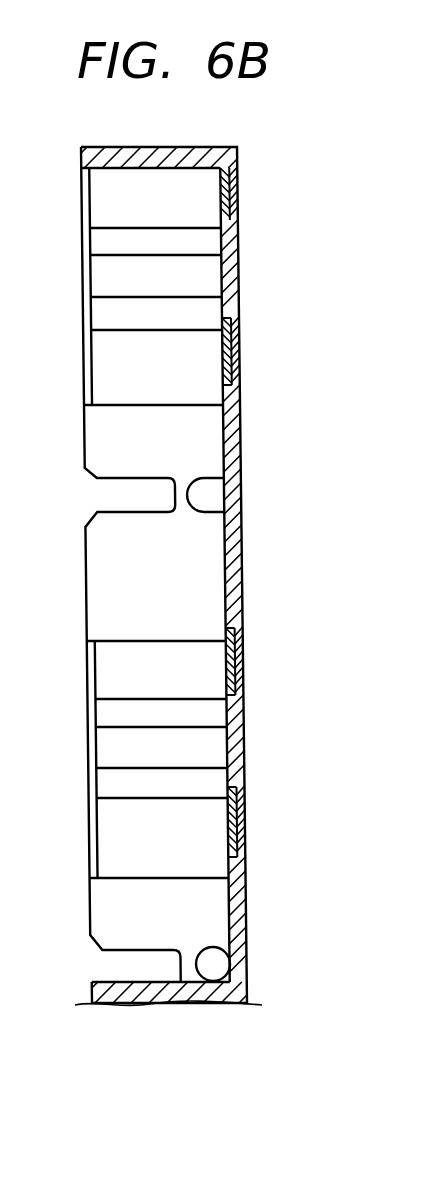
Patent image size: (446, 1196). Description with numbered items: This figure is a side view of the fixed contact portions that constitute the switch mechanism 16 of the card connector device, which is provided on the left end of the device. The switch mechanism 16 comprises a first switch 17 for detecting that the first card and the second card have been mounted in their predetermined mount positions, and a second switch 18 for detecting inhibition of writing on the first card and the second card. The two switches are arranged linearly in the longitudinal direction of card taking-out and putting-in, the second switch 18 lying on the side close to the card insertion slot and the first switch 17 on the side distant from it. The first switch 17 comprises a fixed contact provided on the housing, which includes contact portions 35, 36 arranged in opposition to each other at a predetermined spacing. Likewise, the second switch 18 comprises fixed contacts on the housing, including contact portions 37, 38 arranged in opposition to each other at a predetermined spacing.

The switch mechanism 16 is at (306, 566).
The first switch 17 is at (313, 175).
The second switch 18 is at (320, 652).
The contact portion 35 is at (232, 186).
The contact portion 36 is at (232, 333).
The contact portion 37 is at (235, 665).
The contact portion 38 is at (237, 807).